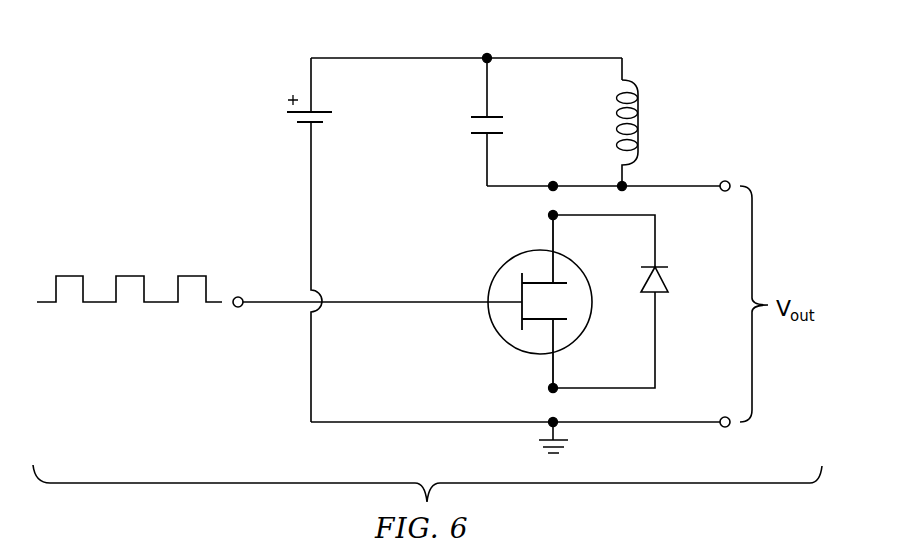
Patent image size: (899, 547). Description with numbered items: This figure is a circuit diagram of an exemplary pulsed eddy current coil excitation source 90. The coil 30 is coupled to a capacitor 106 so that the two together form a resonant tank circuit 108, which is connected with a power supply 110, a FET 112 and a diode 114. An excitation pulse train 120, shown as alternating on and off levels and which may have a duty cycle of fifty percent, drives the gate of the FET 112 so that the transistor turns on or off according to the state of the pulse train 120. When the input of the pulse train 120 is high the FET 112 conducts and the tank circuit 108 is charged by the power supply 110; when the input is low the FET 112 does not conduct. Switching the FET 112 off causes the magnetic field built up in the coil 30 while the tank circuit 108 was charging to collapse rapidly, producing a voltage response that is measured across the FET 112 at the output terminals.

The drive circuit 90 is at (199, 106).
The resonant tank circuit 108 is at (571, 45).
The coil 30 is at (631, 80).
The capacitor 106 is at (490, 117).
The power supply 110 is at (328, 112).
The FET 112 is at (509, 261).
The diode 114 is at (664, 267).
The excitation pulse train 120 is at (125, 230).